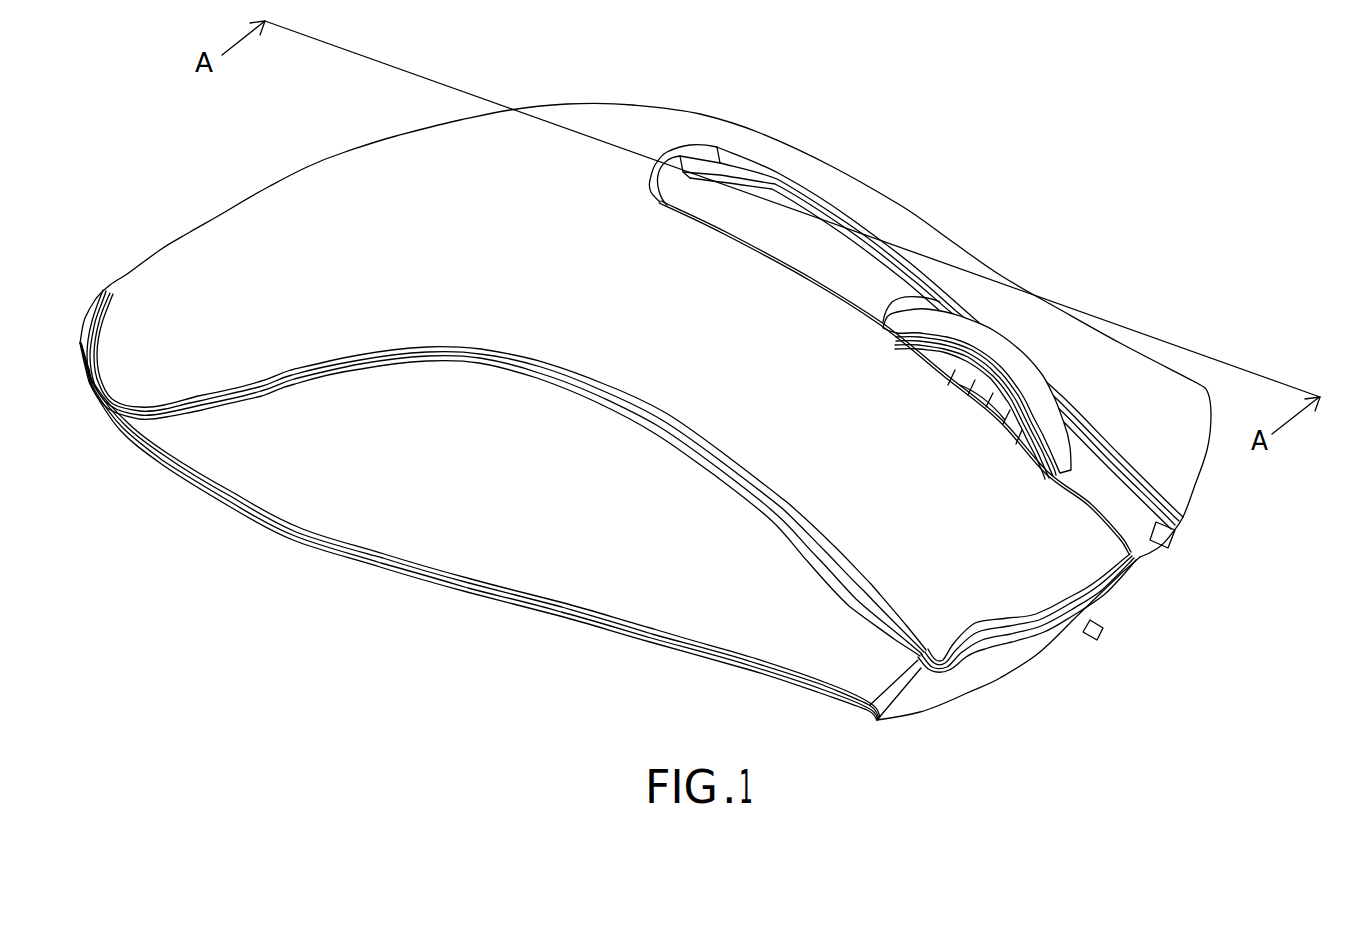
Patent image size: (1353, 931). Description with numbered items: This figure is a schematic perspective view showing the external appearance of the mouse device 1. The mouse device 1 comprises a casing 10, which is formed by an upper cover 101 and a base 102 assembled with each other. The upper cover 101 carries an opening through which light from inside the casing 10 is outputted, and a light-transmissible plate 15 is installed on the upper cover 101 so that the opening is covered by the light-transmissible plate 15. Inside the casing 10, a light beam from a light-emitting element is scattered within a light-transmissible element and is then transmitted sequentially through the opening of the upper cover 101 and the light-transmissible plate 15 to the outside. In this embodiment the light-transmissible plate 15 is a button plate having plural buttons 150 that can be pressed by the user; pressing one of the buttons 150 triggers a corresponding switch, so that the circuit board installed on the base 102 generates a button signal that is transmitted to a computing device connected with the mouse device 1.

The mouse device 1 is at (1116, 184).
The casing 10 is at (182, 565).
The upper cover 101 is at (403, 525).
The base 102 is at (977, 683).
The light-transmissible plate 15 is at (367, 170).
The buttons 150 is at (1177, 440).